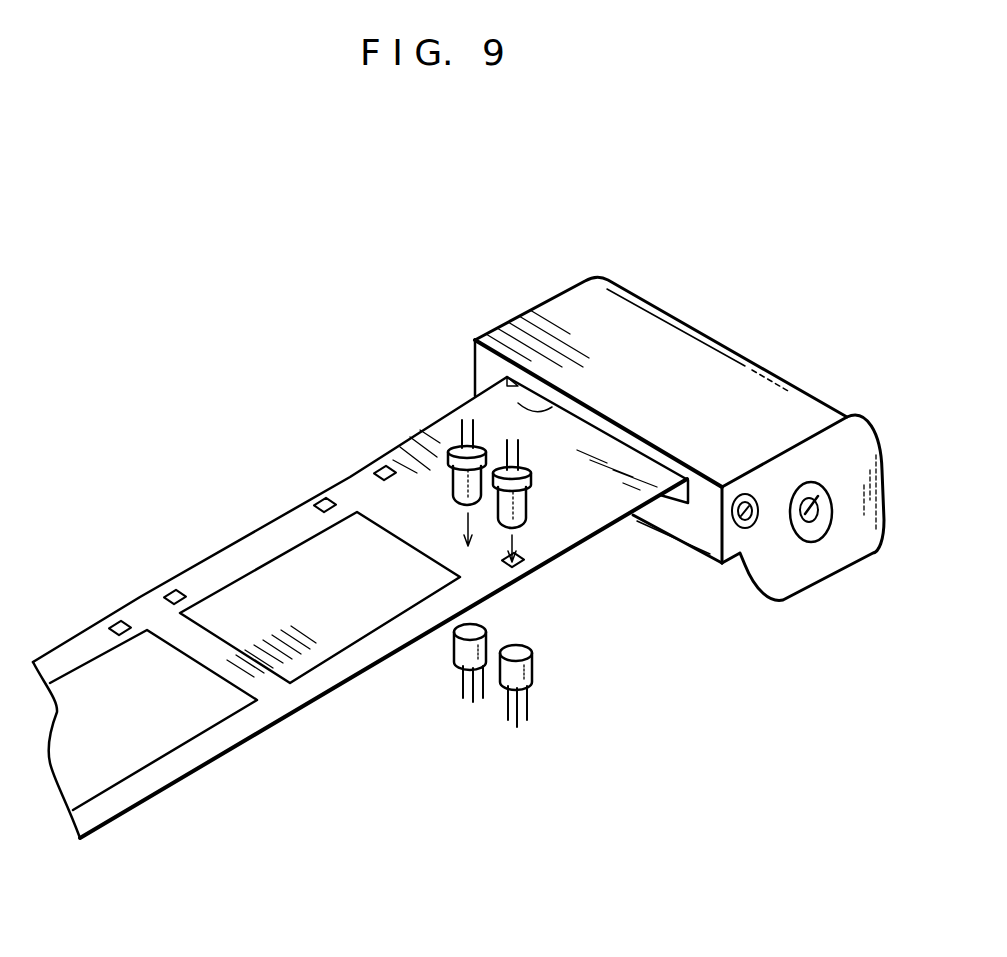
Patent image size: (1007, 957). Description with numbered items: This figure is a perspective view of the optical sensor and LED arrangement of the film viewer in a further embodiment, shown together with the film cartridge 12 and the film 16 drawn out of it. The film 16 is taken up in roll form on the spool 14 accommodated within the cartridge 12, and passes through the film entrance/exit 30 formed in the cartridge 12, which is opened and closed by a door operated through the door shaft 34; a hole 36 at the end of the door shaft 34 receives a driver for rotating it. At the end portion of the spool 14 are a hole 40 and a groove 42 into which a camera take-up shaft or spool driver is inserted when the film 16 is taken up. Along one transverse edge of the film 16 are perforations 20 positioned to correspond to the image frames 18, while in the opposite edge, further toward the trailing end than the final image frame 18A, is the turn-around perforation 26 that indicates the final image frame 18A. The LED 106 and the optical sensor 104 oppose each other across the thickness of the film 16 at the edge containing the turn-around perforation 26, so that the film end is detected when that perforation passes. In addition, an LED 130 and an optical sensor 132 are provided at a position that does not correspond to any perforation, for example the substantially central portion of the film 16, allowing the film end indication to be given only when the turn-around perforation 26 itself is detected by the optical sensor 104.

The cartridge 12 is at (661, 313).
The spool 14 is at (814, 541).
The film 16 is at (440, 440).
The image frames 18 is at (150, 763).
The final image frame 18A is at (313, 663).
The perforations 20 is at (322, 500).
The turn-around perforation 26 is at (530, 557).
The film entrance/exit 30 is at (463, 386).
The door shaft 34 is at (745, 493).
The hole 36 is at (740, 553).
The hole 40 is at (790, 535).
The groove 42 is at (810, 482).
The optical sensor 104 is at (508, 672).
The LED 106 is at (532, 505).
The LED 130 is at (450, 485).
The optical sensor 132 is at (455, 648).